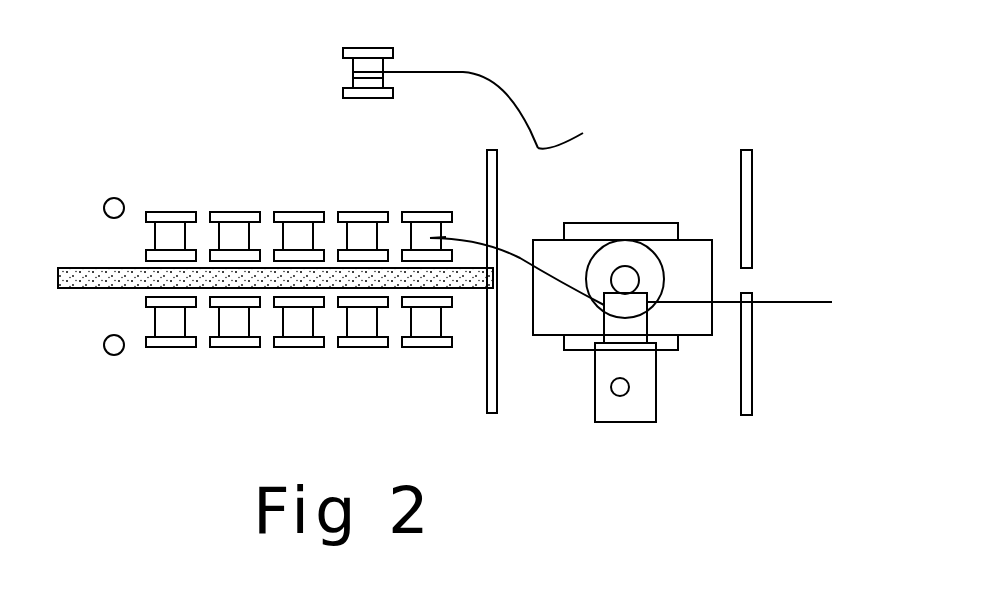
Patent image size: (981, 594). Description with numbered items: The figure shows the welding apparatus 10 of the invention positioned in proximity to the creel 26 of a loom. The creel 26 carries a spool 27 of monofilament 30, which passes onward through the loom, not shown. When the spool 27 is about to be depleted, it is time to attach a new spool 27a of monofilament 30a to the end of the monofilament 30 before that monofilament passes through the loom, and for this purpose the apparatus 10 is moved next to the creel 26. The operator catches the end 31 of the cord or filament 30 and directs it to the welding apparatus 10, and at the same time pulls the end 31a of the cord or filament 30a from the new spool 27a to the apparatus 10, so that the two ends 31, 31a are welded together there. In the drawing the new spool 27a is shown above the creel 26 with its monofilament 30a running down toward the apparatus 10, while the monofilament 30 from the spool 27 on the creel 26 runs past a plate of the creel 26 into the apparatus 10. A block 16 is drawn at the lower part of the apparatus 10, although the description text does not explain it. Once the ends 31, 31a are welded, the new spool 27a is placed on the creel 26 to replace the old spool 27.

The apparatus 10 is at (710, 376).
The gripper block 16 is at (603, 413).
The creel 26 is at (488, 392).
The spool 27 is at (357, 349).
The new spool 27a is at (367, 52).
The monofilament 30 is at (510, 249).
The monofilament 30a is at (467, 72).
The end 31 is at (432, 237).
The end 31a is at (577, 129).